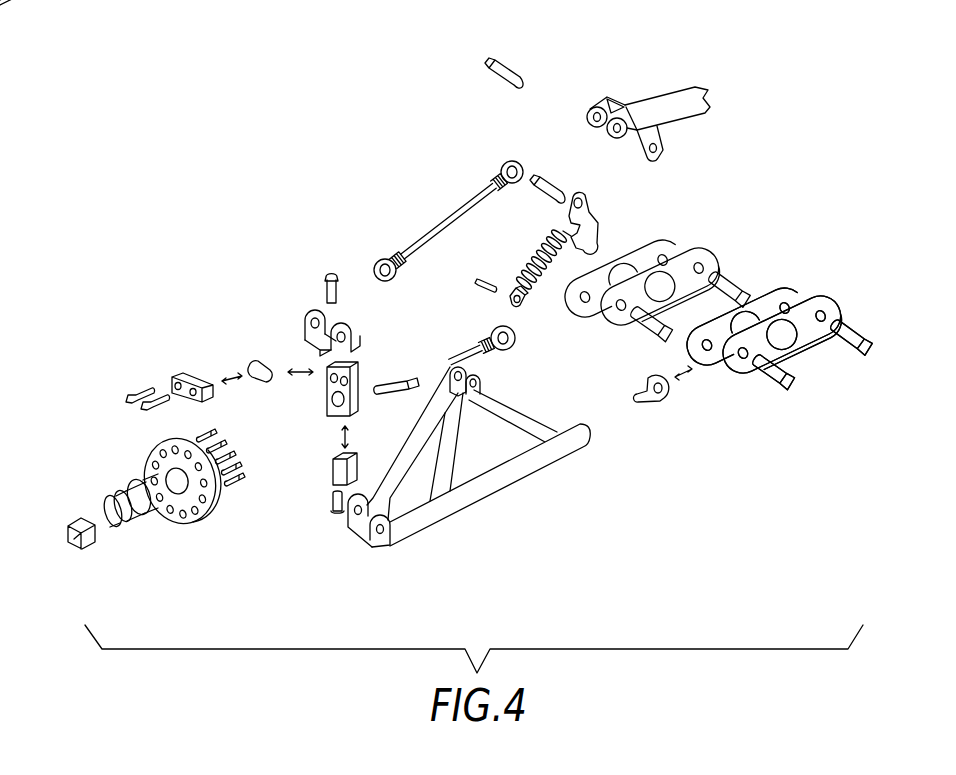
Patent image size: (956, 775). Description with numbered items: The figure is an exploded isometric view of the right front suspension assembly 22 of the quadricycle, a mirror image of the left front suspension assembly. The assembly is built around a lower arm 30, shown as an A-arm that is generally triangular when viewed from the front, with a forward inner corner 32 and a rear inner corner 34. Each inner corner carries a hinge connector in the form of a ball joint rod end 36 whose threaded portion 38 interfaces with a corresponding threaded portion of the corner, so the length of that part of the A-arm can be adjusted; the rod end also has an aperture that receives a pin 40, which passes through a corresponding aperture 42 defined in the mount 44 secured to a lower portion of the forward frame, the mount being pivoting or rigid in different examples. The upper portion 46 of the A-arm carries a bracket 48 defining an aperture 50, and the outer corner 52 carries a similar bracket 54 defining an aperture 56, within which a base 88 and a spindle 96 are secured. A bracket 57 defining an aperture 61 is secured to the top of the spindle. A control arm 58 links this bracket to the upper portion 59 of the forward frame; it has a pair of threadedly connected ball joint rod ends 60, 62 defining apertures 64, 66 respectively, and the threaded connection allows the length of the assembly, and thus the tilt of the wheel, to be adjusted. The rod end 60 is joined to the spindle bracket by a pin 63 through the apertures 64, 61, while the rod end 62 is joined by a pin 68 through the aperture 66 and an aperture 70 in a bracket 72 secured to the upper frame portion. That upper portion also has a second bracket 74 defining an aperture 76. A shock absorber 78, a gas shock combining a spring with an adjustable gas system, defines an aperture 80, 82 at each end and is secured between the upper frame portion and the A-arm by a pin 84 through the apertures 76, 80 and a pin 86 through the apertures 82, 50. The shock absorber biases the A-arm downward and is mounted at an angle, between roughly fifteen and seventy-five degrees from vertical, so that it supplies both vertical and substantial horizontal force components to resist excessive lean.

The right front suspension assembly 22 is at (306, 233).
The lower arm 30 is at (469, 481).
The forward inner corner 32 is at (584, 446).
The rear inner corner 34 is at (492, 346).
The ball joint rod end 36 is at (506, 351).
The threaded portion 38 is at (660, 404).
The pin 40 is at (643, 325).
The aperture 42 is at (577, 305).
The mount 44 is at (703, 245).
The upper portion 46 is at (480, 430).
The bracket 48 is at (449, 368).
The aperture 50 is at (481, 386).
The outer corner 52 is at (436, 545).
The bracket 54 is at (375, 551).
The aperture 56 is at (349, 533).
The bracket 57 is at (325, 333).
The control arm 58 is at (432, 201).
The upper portion 59 is at (664, 117).
The ball joint rod end 60 is at (390, 258).
The aperture 61 is at (352, 329).
The ball joint rod end 62 is at (499, 178).
The pin 63 is at (323, 281).
The aperture 64 is at (373, 263).
The aperture 66 is at (512, 160).
The pin 68 is at (517, 65).
The aperture 70 is at (585, 117).
The bracket 72 is at (588, 104).
The second bracket 74 is at (660, 132).
The aperture 76 is at (657, 155).
The shock absorber 78 is at (517, 275).
The aperture 80 is at (585, 193).
The aperture 82 is at (508, 304).
The pin 84 is at (542, 190).
The pin 86 is at (478, 279).
The base 88 is at (334, 465).
The spindle 96 is at (326, 404).